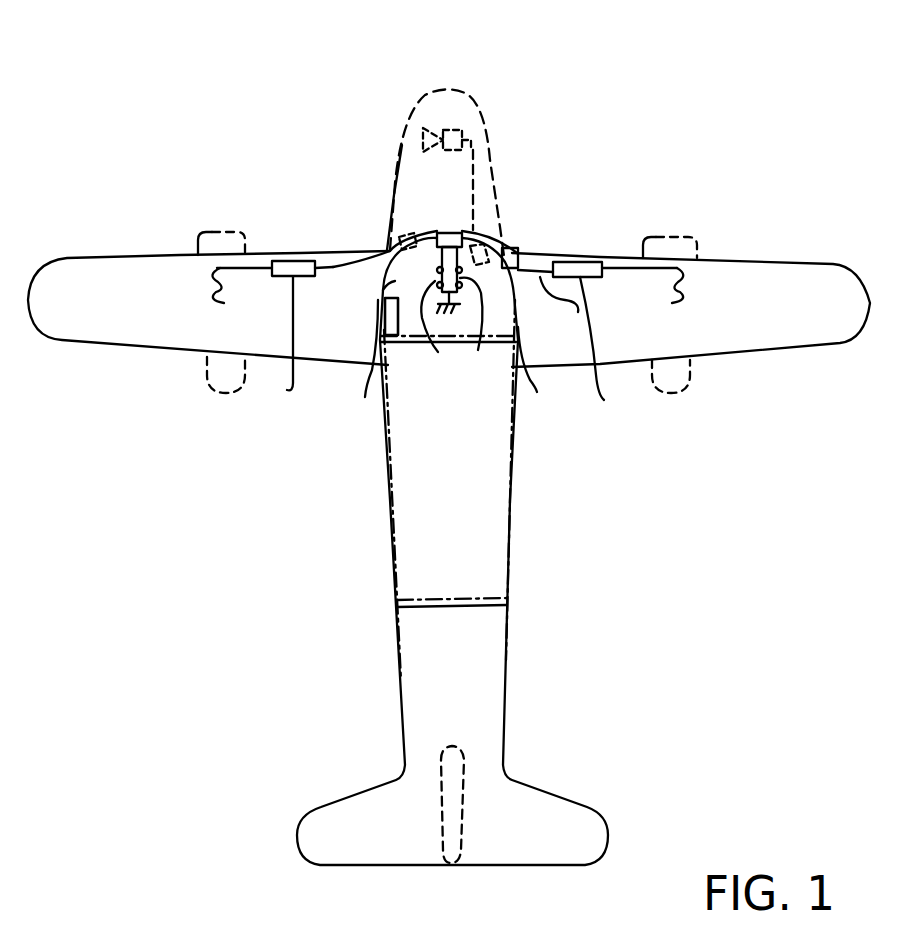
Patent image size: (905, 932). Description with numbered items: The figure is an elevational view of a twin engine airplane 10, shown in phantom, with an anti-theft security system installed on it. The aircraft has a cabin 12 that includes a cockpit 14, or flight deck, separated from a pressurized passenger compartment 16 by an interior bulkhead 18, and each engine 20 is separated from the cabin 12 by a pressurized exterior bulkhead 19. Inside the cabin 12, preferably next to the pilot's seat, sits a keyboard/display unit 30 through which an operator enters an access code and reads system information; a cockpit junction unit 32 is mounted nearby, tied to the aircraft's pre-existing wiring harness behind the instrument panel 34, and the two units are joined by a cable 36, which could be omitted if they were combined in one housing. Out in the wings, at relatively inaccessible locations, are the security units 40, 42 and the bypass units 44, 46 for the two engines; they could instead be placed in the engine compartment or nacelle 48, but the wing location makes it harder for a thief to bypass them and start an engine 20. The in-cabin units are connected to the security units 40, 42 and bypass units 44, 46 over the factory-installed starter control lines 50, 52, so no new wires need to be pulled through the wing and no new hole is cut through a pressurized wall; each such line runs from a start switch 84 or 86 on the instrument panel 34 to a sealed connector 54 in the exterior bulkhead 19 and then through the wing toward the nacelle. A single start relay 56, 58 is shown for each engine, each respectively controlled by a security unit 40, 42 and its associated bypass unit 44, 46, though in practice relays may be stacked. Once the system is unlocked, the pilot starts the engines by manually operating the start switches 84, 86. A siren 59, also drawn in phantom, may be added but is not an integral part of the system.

The twin engine airplane 10 is at (255, 566).
The cabin 12 is at (428, 445).
The cockpit 14 is at (499, 250).
The passenger compartment 16 is at (490, 467).
The interior bulkhead 18 is at (482, 343).
The exterior bulkhead 19 is at (456, 364).
The engine 20 is at (222, 392).
The keyboard/display unit 30 is at (384, 312).
The cockpit junction unit 32 is at (440, 232).
The instrument panel 34 is at (412, 222).
The cable 36 is at (386, 284).
The security unit 40 is at (575, 262).
The security unit 42 is at (282, 261).
The bypass unit 44 is at (614, 352).
The bypass unit 46 is at (268, 347).
The nacelle 48 is at (690, 250).
The starter control line 50 is at (552, 306).
The starter control line 52 is at (333, 267).
The sealed connector 54 is at (512, 250).
The start relay 56 is at (683, 290).
The start relay 58 is at (213, 276).
The siren 59 is at (454, 130).
The start switch 84 is at (445, 318).
The start switch 86 is at (434, 334).